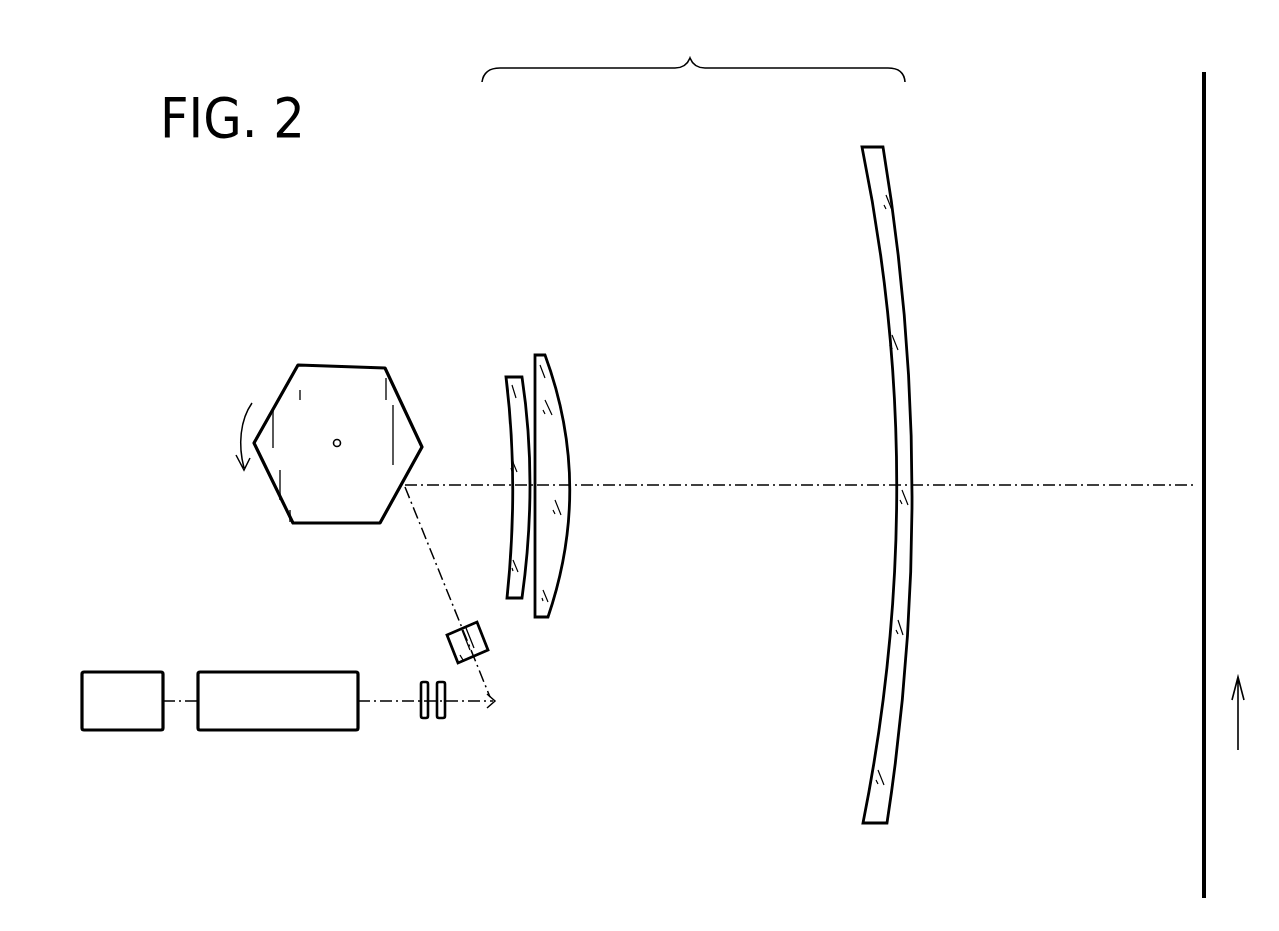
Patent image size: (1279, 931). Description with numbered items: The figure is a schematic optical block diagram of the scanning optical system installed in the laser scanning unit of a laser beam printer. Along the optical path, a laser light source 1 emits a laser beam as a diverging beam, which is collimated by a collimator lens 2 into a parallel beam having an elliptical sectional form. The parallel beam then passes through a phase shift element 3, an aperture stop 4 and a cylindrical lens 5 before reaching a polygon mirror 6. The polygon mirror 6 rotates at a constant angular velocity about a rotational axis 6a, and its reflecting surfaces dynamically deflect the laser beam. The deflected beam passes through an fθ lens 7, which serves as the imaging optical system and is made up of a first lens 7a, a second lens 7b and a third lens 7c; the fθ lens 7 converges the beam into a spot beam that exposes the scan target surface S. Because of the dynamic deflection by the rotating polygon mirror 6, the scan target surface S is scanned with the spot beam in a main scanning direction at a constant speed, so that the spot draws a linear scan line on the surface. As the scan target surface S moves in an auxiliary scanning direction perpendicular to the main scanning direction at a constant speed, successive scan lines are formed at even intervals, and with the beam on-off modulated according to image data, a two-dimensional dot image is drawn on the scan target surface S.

The laser light source 1 is at (142, 672).
The collimator lens 2 is at (293, 672).
The phase shift element 3 is at (425, 718).
The aperture stop 4 is at (445, 707).
The cylindrical lens 5 is at (488, 637).
The polygon mirror 6 is at (355, 364).
The rotational axis 6a is at (334, 441).
The fθ lens 7 is at (694, 425).
The first lens 7a is at (513, 377).
The second lens 7b is at (542, 358).
The third lens 7c is at (873, 152).
The scan target surface S is at (1200, 305).